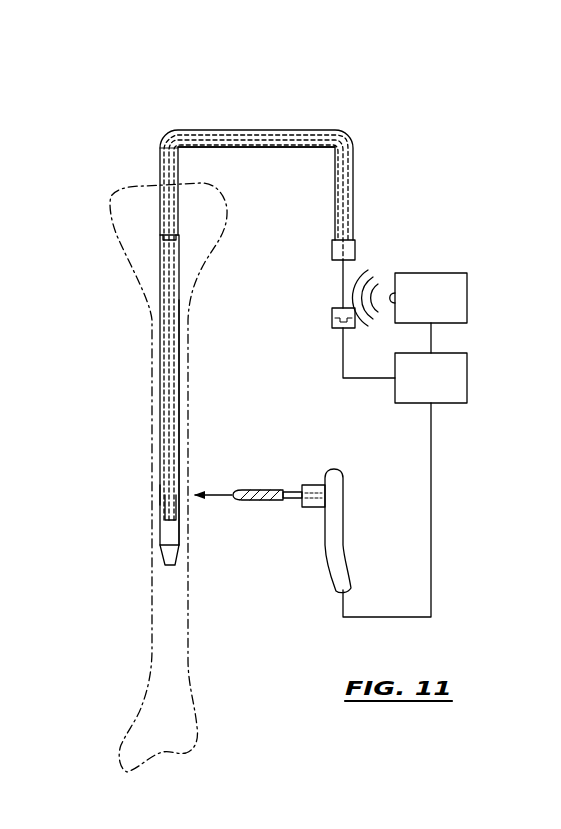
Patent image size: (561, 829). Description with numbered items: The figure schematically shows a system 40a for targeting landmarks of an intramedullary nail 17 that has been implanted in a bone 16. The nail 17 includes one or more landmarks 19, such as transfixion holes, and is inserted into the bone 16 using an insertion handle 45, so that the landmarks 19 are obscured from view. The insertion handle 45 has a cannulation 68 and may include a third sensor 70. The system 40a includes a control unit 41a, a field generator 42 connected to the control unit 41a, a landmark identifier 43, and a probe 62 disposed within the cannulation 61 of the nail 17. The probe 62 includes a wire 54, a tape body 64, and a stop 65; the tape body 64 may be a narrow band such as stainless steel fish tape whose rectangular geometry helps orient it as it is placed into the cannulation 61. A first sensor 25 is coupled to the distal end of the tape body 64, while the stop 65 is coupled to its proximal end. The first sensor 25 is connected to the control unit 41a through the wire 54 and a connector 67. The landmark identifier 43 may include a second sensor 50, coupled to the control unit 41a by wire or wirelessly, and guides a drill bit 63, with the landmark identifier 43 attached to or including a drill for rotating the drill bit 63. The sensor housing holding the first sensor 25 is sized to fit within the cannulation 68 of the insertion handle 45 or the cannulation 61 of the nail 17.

The bone 16 is at (151, 592).
The intramedullary nail 17 is at (180, 247).
The landmarks 19 is at (162, 495).
The first sensor 25 is at (170, 478).
The system for targeting landmarks 40a is at (383, 266).
The control unit 41a is at (468, 389).
The field generator 42 is at (447, 273).
The landmark identifier 43 is at (345, 513).
The insertion handle 45 is at (354, 163).
The second sensor 50 is at (310, 485).
The wire 54 is at (213, 136).
The cannulation 61 is at (168, 358).
The probe 62 is at (180, 412).
The drill bit 63 is at (243, 500).
The tape body 64 is at (270, 140).
The stop 65 is at (330, 246).
The connector 67 is at (331, 318).
The cannulation of insertion handle 68 is at (235, 142).
The third sensor 70 is at (168, 130).